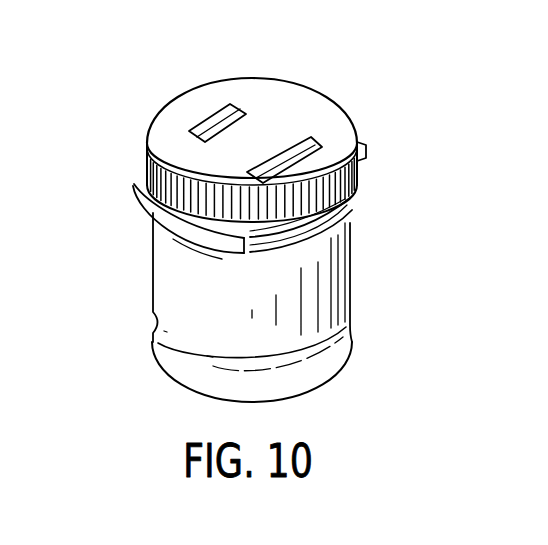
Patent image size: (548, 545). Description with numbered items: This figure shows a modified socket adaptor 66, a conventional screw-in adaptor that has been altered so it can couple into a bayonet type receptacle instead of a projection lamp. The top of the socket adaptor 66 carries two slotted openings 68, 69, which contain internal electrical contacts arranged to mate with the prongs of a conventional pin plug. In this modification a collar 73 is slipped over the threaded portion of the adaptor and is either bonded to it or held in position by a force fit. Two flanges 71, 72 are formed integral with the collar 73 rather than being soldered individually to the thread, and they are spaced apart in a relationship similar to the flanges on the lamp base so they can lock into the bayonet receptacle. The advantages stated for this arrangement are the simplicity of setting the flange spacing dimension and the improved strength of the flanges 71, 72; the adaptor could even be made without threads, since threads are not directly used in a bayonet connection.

The socket adaptor 66 is at (278, 59).
The slotted opening 68 is at (304, 144).
The slotted opening 69 is at (208, 126).
The flange 71 is at (135, 186).
The flange 72 is at (364, 150).
The collar 73 is at (353, 265).